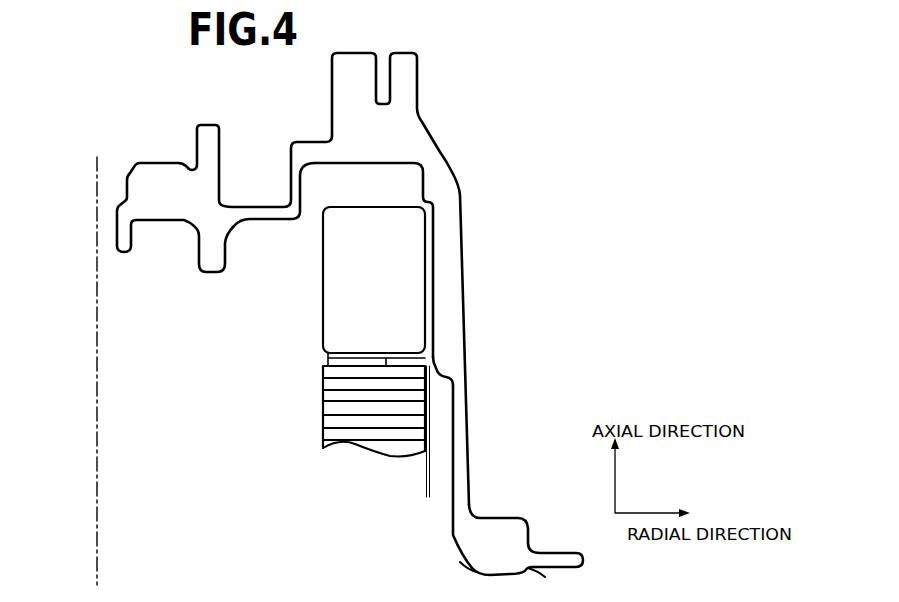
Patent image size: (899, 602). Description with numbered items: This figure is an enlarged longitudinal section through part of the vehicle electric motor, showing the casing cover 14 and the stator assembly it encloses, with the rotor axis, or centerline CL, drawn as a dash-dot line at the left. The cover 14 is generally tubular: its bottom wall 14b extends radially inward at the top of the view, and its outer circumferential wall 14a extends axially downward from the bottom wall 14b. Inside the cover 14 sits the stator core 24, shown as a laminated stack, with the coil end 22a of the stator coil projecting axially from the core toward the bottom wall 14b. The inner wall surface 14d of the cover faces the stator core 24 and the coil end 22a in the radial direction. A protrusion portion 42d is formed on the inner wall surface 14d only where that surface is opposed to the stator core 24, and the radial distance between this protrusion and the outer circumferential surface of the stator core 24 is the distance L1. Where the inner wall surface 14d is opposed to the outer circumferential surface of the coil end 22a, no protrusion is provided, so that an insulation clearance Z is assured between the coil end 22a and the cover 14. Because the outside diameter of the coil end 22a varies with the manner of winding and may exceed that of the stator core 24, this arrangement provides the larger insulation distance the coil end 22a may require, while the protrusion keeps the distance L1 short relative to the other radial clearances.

The casing cover 14 is at (350, 297).
The outer circumferential wall 14a is at (452, 220).
The bottom wall 14b is at (253, 212).
The inner wall surface 14d is at (423, 333).
The coil end 22a is at (350, 213).
The stator core 24 is at (300, 415).
The stepped protrusion 42d is at (433, 370).
The insulation clearance Z is at (428, 268).
The distance between protrusion portion and outer circumferential surface of stator L1 is at (447, 488).
The axis (centerline) CL is at (95, 197).